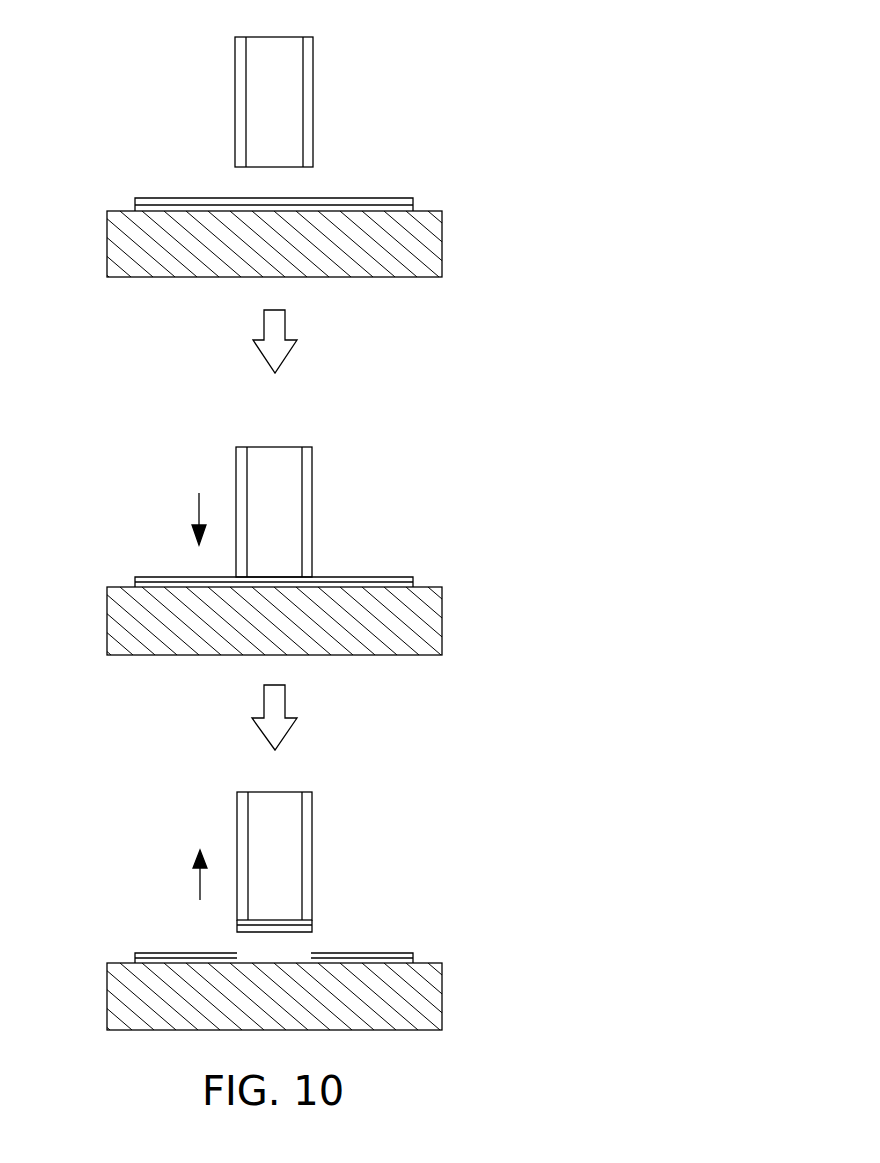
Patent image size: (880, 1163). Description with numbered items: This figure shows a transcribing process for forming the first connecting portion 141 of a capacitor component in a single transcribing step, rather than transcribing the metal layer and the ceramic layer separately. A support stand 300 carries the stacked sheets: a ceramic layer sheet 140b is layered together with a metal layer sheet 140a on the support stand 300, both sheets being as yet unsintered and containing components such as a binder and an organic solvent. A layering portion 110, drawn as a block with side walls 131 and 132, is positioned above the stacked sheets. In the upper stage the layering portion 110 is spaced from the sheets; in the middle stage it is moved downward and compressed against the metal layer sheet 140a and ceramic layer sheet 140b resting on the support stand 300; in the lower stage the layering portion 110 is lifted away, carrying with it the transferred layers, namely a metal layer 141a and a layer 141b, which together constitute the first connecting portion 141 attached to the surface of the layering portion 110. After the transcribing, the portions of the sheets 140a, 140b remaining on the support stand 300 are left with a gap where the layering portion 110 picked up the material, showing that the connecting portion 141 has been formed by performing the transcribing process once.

The layering portion 110 is at (293, 62).
The first sidewall 131 is at (313, 118).
The second sidewall 132 is at (236, 93).
The metal layer sheet 140a is at (413, 199).
The ceramic layer sheet 140b is at (413, 206).
The support stand 300 is at (430, 240).
The first connecting portion 141 is at (92, 878).
The metal layer 141a is at (237, 923).
The second transferred layer 141b is at (237, 930).